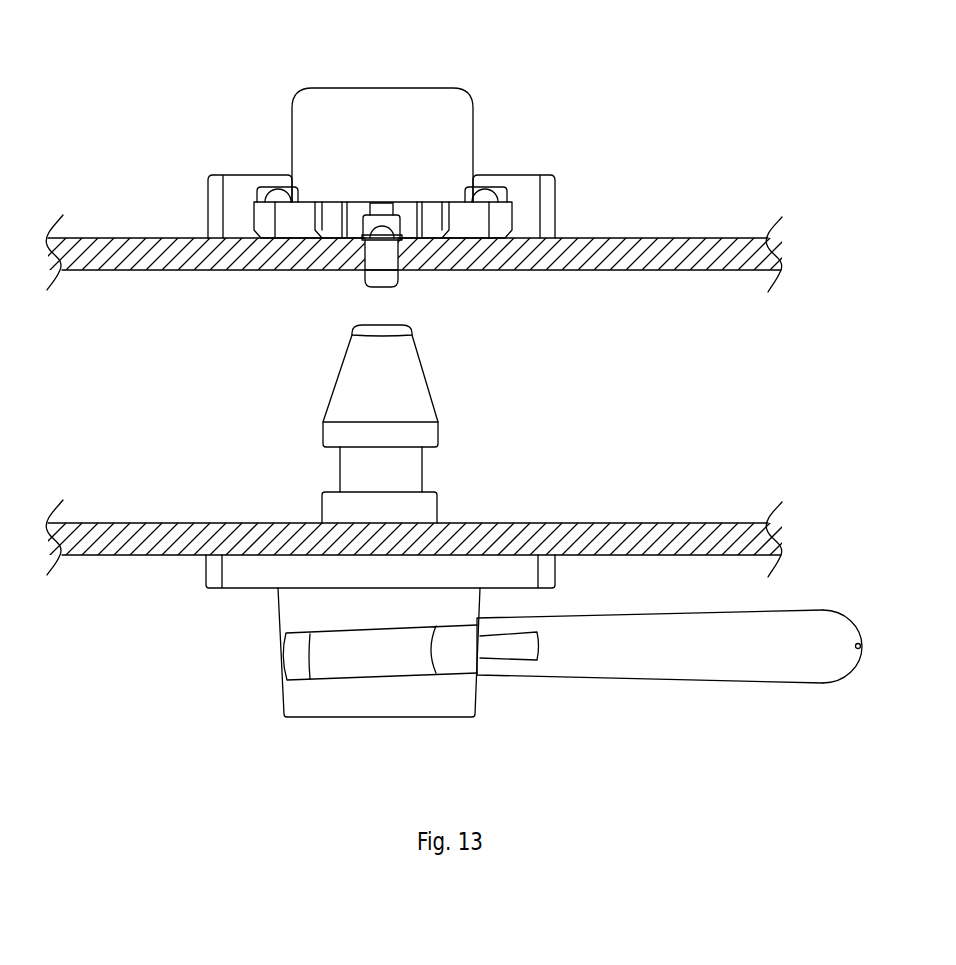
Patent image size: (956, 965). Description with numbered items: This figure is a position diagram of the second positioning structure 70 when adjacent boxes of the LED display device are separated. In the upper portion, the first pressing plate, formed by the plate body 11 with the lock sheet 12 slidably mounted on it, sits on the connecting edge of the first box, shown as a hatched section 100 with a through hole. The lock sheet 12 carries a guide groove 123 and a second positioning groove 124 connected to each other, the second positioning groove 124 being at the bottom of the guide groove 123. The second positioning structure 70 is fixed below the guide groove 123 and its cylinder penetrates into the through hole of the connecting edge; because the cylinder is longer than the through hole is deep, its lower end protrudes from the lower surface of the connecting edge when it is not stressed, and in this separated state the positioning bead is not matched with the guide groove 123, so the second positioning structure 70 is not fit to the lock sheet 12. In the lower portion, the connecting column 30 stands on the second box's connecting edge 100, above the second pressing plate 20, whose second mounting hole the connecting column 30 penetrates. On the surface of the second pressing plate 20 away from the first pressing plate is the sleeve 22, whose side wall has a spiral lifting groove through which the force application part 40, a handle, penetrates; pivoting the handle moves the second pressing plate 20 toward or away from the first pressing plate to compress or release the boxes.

The panel plate 100 is at (658, 242).
The plate body 11 is at (230, 175).
The lock sheet 12 is at (402, 118).
The guide groove 123 is at (366, 217).
The second positioning groove 124 is at (396, 203).
The second positioning structure 70 is at (392, 275).
The connecting column 30 is at (365, 392).
The second pressing plate 20 is at (250, 575).
The sleeve 22 is at (385, 702).
The force application part 40 is at (710, 657).